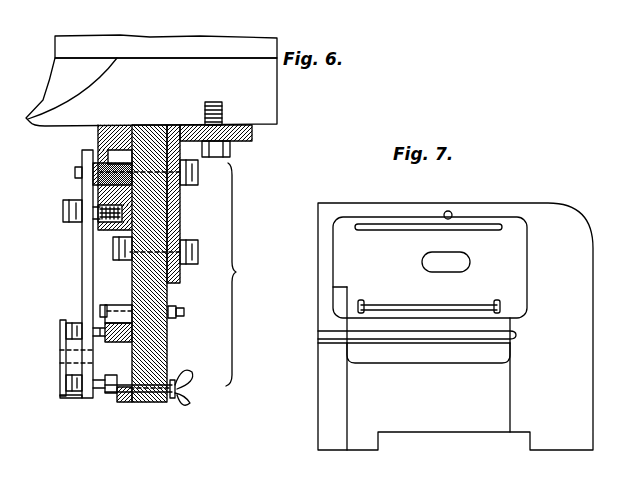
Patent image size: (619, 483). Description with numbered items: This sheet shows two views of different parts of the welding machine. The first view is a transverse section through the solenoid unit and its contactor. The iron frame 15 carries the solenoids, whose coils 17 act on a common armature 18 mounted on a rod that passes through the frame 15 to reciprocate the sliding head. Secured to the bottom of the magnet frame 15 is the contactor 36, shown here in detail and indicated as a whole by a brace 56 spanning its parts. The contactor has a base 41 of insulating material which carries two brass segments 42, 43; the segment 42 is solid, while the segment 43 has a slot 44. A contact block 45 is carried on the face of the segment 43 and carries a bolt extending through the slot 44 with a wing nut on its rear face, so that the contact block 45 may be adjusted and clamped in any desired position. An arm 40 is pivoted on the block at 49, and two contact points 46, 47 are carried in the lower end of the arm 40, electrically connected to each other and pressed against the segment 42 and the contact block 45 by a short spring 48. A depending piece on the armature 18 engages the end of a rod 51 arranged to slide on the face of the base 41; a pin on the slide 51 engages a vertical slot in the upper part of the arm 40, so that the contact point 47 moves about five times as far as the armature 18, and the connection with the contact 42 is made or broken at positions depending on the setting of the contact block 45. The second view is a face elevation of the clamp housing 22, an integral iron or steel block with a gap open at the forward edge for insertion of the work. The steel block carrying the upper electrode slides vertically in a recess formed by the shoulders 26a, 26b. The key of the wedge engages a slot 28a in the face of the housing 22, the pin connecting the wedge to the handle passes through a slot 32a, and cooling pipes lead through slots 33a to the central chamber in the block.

In FIG. 6, the iron frame 15 is at (151, 92).
In FIG. 6, the coils 17 is at (72, 88).
In FIG. 6, the armature 18 is at (186, 40).
In FIG. 7, the clamp housing 22 is at (455, 326).
In FIG. 7, the shoulder 26a is at (350, 332).
In FIG. 7, the shoulder 26b is at (510, 320).
In FIG. 7, the slot 28a is at (393, 231).
In FIG. 7, the slot 32a is at (445, 273).
In FIG. 7, the slots 33a is at (364, 303).
In FIG. 6, the contactor 36 is at (60, 363).
In FIG. 6, the arm 40 is at (82, 258).
In FIG. 6, the base 41 is at (165, 228).
In FIG. 6, the brass segment 42 is at (160, 331).
In FIG. 6, the brass segment 43 is at (115, 395).
In FIG. 6, the slot 44 is at (125, 402).
In FIG. 6, the contact block 45 is at (100, 375).
In FIG. 6, the contact point 46 is at (103, 305).
In FIG. 6, the contact point 47 is at (100, 392).
In FIG. 6, the spring 48 is at (66, 331).
In FIG. 6, the pivot 49 is at (63, 211).
In FIG. 6, the rod 51 is at (93, 165).
In FIG. 6, the assembly 56 is at (244, 274).